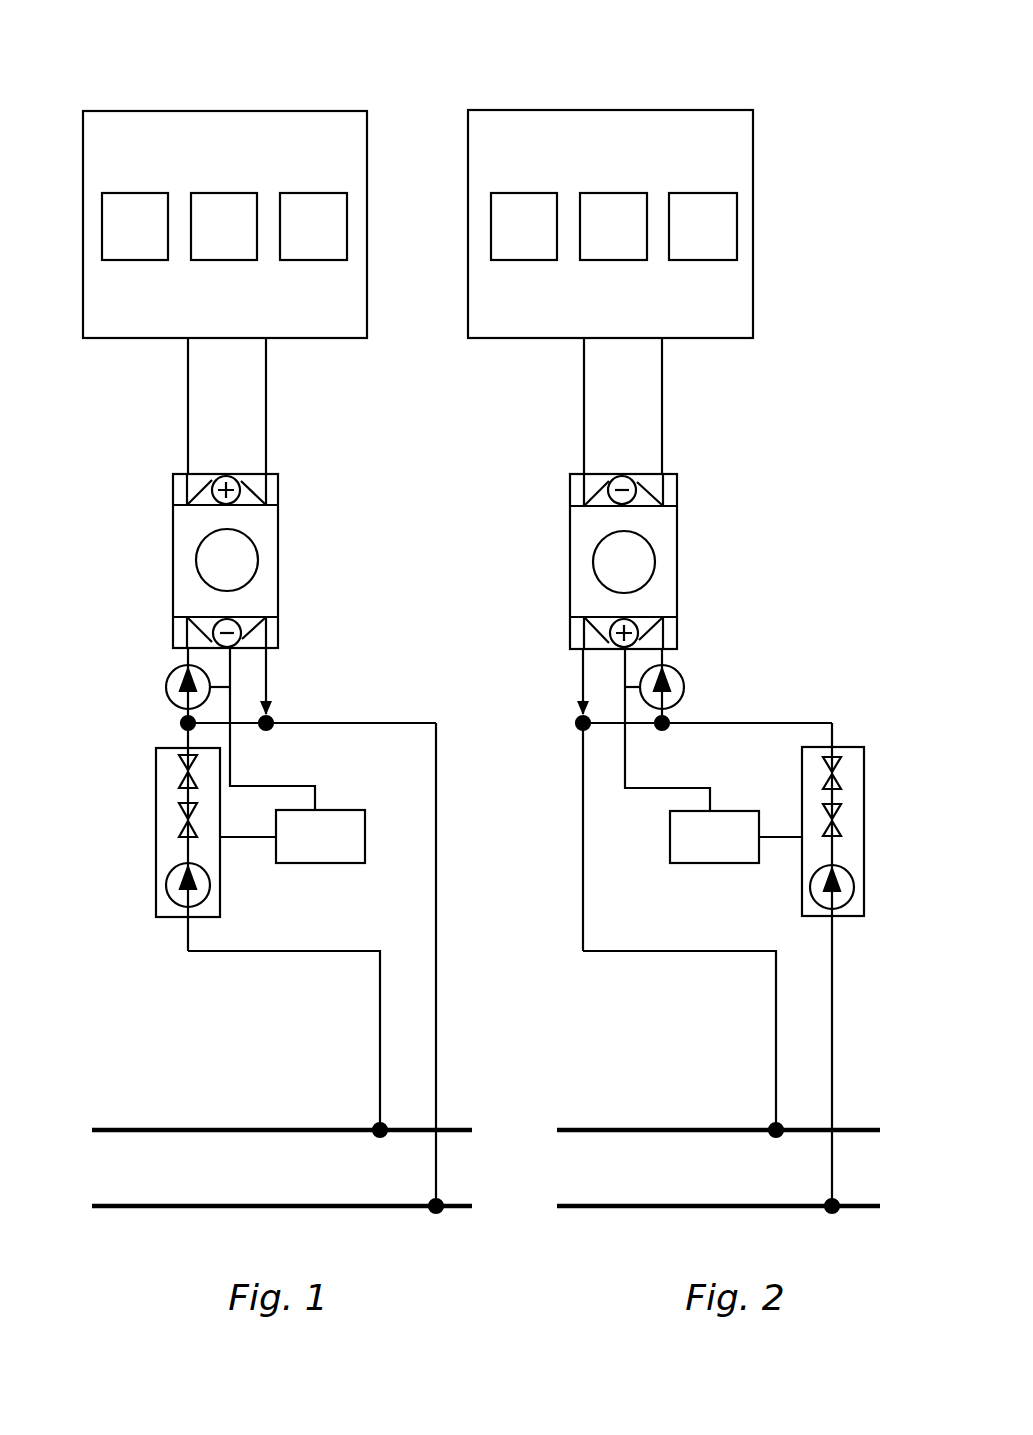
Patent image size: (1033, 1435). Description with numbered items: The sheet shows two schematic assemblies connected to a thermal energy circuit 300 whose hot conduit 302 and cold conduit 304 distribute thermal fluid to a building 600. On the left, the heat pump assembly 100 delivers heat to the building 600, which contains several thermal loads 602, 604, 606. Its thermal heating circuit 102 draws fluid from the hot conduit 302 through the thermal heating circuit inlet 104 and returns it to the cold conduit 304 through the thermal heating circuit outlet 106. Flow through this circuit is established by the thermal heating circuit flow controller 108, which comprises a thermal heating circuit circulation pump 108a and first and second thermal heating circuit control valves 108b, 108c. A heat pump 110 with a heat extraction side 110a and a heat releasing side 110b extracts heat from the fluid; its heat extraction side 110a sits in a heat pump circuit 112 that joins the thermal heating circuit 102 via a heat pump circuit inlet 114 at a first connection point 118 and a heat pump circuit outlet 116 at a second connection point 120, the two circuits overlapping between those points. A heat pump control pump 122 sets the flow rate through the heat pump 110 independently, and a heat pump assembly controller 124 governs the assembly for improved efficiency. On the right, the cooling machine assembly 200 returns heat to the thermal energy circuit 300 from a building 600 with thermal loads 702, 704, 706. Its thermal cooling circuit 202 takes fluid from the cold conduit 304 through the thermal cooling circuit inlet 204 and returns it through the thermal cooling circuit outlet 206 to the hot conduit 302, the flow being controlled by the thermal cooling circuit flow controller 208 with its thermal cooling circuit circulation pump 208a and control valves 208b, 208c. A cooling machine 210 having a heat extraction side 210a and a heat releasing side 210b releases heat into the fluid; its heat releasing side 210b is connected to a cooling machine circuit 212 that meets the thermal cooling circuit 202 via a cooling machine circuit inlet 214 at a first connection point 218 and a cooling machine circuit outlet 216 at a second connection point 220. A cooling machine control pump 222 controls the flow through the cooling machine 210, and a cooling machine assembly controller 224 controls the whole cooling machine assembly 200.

In FIG. 1, the heat pump assembly 100 is at (345, 490).
In FIG. 1, the thermal heating circuit 102 is at (462, 868).
In FIG. 1, the thermal heating circuit inlet 104 is at (380, 1060).
In FIG. 1, the thermal heating circuit outlet 106 is at (437, 1015).
In FIG. 1, the thermal heating circuit flow controller 108 is at (130, 849).
In FIG. 1, the thermal heating circuit circulation pump 108a is at (170, 900).
In FIG. 1, the first thermal heating circuit control valve 108b is at (183, 820).
In FIG. 1, the second thermal heating circuit control valve 108c is at (183, 775).
In FIG. 1, the heat pump 110 is at (227, 561).
In FIG. 1, the heat extraction side 110a is at (278, 630).
In FIG. 1, the heat releasing side 110b is at (173, 493).
In FIG. 1, the heat pump circuit 112 is at (130, 662).
In FIG. 1, the heat pump circuit inlet 114 is at (172, 716).
In FIG. 1, the heat pump circuit outlet 116 is at (273, 711).
In FIG. 1, the first connection point 118 is at (178, 733).
In FIG. 1, the second connection point 120 is at (272, 730).
In FIG. 1, the heat pump control pump 122 is at (170, 680).
In FIG. 1, the heat pump assembly controller 124 is at (292, 836).
In FIG. 2, the cooling machine assembly 200 is at (760, 480).
In FIG. 2, the thermal cooling circuit 202 is at (812, 698).
In FIG. 2, the thermal cooling circuit inlet 204 is at (832, 1000).
In FIG. 2, the thermal cooling circuit outlet 206 is at (777, 1043).
In FIG. 2, the thermal cooling circuit flow controller 208 is at (876, 964).
In FIG. 2, the thermal cooling circuit circulation pump 208a is at (845, 888).
In FIG. 2, the first thermal cooling circuit control valve 208b is at (841, 812).
In FIG. 2, the second thermal cooling circuit control valve 208c is at (841, 770).
In FIG. 2, the cooling machine 210 is at (621, 561).
In FIG. 2, the heat extraction side 210a is at (570, 497).
In FIG. 2, the heat releasing side 210b is at (677, 630).
In FIG. 2, the cooling machine circuit 212 is at (570, 662).
In FIG. 2, the cooling machine circuit inlet 214 is at (672, 718).
In FIG. 2, the cooling machine circuit outlet 216 is at (575, 712).
In FIG. 2, the first connection point 218 is at (672, 728).
In FIG. 2, the second connection point 220 is at (578, 728).
In FIG. 2, the cooling machine control pump 222 is at (683, 684).
In FIG. 2, the cooling machine assembly controller 224 is at (736, 837).
In FIG. 1, the thermal energy circuit 300 is at (178, 1098).
In FIG. 2, the thermal energy circuit 300 is at (656, 1096).
In FIG. 1, the hot conduit 302 is at (97, 1128).
In FIG. 2, the hot conduit 302 is at (562, 1128).
In FIG. 1, the cold conduit 304 is at (140, 1210).
In FIG. 2, the cold conduit 304 is at (610, 1208).
In FIG. 1, the building 600 is at (225, 169).
In FIG. 2, the building 600 is at (610, 169).
In FIG. 1, the thermal load 602 is at (135, 226).
In FIG. 1, the thermal load 604 is at (224, 226).
In FIG. 1, the thermal load 606 is at (313, 226).
In FIG. 2, the thermal load 702 is at (524, 226).
In FIG. 2, the thermal load 704 is at (613, 226).
In FIG. 2, the thermal load 706 is at (703, 226).